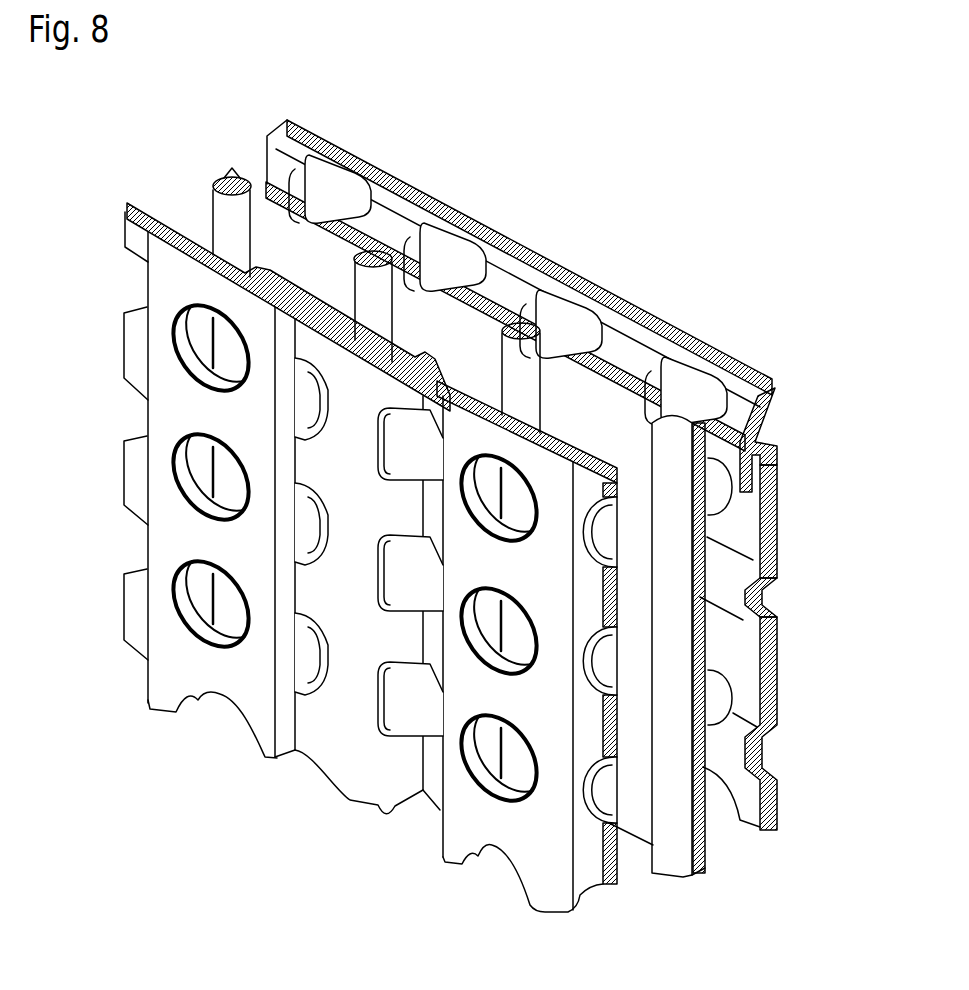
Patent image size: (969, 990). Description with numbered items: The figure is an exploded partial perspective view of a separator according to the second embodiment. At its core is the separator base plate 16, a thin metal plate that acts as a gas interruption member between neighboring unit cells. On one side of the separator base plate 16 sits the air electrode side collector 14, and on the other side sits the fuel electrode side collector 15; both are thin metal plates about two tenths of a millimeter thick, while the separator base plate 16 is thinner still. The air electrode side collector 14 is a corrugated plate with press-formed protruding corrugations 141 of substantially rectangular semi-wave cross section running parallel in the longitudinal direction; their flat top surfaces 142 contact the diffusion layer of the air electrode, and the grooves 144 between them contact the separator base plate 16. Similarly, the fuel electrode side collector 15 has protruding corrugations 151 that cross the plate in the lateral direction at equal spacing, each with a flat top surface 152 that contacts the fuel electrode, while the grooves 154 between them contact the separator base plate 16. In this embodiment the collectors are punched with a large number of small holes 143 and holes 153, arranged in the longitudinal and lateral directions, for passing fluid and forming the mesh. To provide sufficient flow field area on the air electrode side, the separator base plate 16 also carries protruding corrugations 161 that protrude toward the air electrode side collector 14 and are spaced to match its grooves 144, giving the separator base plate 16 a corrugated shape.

The air electrode side collector 14 is at (136, 299).
The protruding corrugations 141 is at (143, 700).
The flat top surfaces 142 is at (228, 693).
The holes 143 is at (568, 533).
The grooves 144 is at (450, 375).
The fuel electrode side collector 15 is at (700, 338).
The protruding corrugations 151 is at (777, 683).
The flat top surface 152 is at (778, 495).
The holes 153 is at (843, 417).
The grooves 154 is at (745, 603).
The separator base plate 16 is at (205, 200).
The protruding corrugations 161 is at (642, 447).